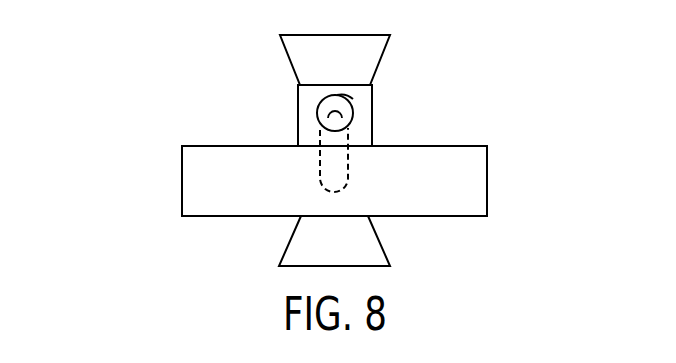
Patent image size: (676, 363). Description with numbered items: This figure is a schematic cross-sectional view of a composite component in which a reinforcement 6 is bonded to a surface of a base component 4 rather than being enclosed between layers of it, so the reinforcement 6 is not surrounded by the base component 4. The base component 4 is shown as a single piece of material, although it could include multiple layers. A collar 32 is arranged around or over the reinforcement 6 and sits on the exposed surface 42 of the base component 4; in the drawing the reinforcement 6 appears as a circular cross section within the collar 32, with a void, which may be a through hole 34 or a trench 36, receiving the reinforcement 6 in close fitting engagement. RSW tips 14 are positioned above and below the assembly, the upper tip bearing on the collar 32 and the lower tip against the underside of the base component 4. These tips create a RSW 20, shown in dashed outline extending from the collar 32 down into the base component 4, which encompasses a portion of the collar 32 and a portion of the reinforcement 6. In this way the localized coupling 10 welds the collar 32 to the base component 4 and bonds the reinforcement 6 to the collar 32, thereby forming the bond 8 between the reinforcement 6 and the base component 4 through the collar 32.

The base component 4 is at (467, 180).
The exposed surface 42 is at (209, 146).
The RSW tip 14 is at (313, 62).
The collar 32 is at (312, 128).
The reinforcement 6 is at (328, 106).
The through hole 34 is at (412, 75).
The trench 36 is at (356, 98).
The bond 8 is at (409, 148).
The localized coupling 10 is at (409, 148).
The RSW 20 is at (348, 130).